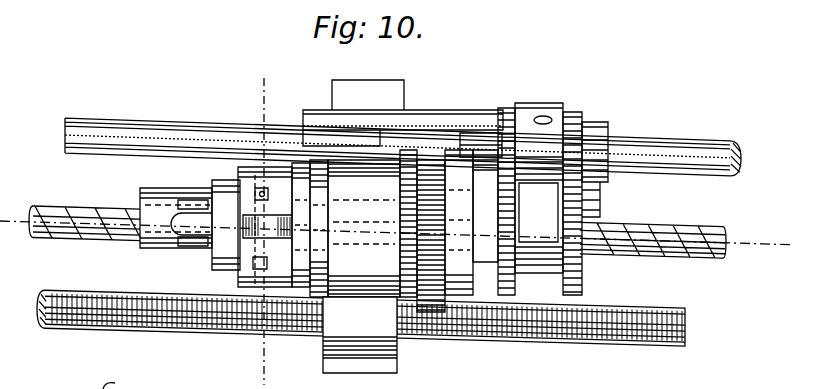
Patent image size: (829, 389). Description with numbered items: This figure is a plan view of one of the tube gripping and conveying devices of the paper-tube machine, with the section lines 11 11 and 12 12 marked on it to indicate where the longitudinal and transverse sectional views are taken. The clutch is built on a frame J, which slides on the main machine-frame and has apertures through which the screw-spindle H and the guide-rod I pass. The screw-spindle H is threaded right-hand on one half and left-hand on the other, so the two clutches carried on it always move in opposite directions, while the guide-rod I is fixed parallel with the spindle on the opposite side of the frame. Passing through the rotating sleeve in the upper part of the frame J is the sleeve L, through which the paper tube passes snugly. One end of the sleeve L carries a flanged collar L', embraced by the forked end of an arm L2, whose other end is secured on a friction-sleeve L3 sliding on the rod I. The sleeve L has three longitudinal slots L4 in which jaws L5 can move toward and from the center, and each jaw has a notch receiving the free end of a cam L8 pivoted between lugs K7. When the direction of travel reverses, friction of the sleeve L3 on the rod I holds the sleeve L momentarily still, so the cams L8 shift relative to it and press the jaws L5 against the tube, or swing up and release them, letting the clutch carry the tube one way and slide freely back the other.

The screw-spindle H is at (361, 318).
The guide-rod I is at (403, 138).
The frame J is at (361, 266).
The lugs K7 is at (270, 227).
The sleeve L is at (311, 218).
The flanged collar L' is at (539, 271).
The arm L2 is at (539, 188).
The friction-sleeve L3 is at (403, 118).
The longitudinal slots L4 is at (176, 248).
The jaws L5 is at (176, 218).
The cam L8 is at (226, 225).
The section line 11 11 is at (395, 233).
The section line 12 12 is at (261, 223).